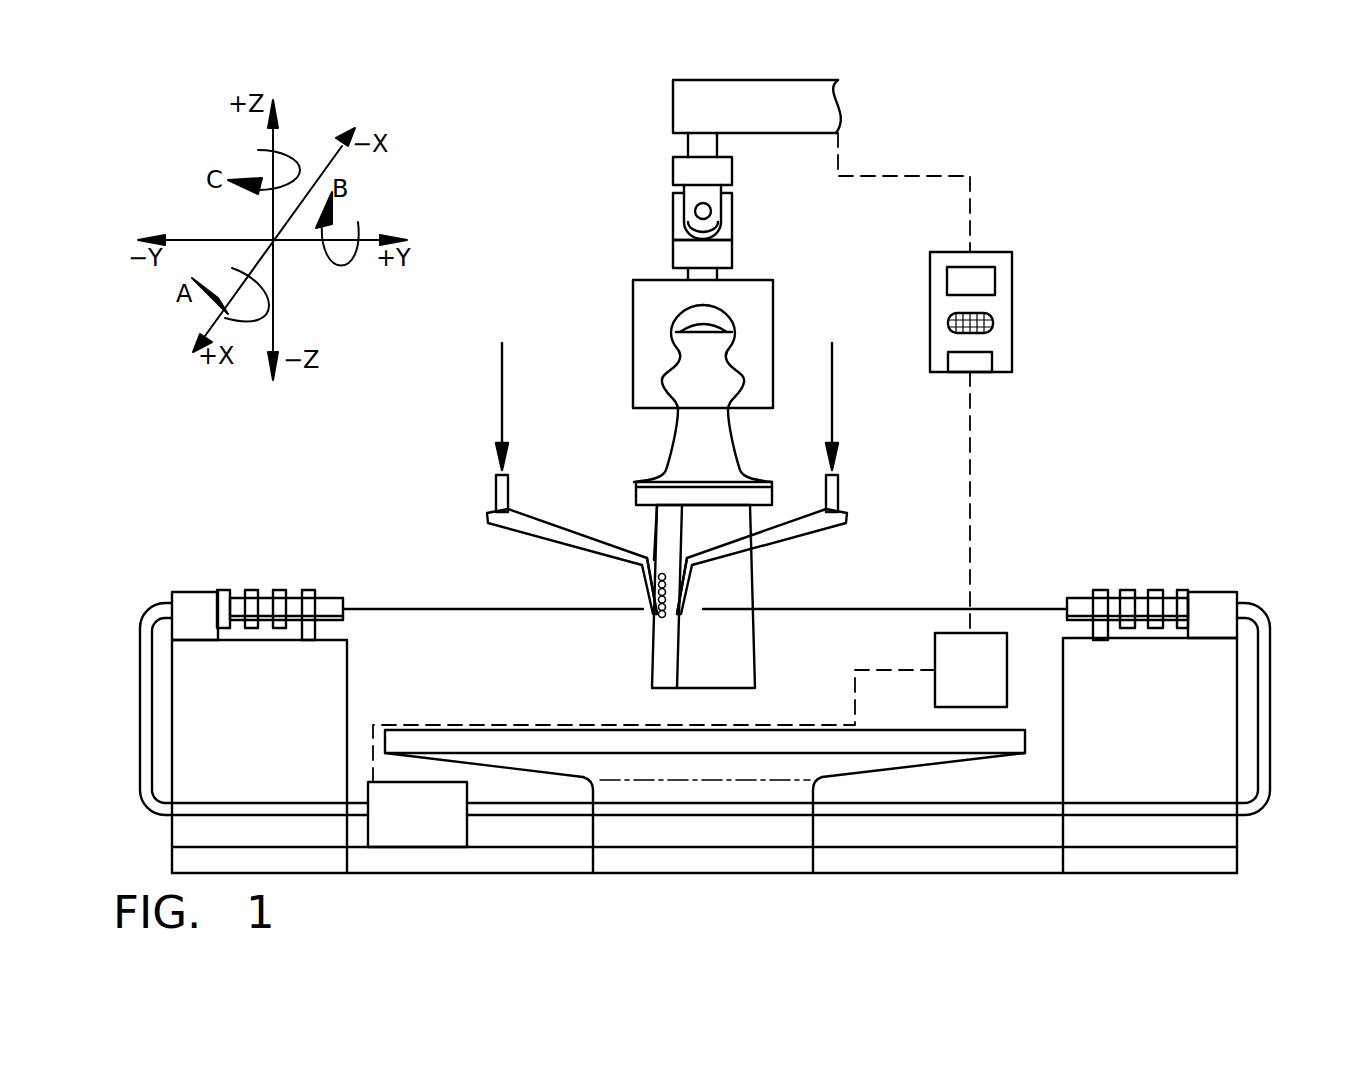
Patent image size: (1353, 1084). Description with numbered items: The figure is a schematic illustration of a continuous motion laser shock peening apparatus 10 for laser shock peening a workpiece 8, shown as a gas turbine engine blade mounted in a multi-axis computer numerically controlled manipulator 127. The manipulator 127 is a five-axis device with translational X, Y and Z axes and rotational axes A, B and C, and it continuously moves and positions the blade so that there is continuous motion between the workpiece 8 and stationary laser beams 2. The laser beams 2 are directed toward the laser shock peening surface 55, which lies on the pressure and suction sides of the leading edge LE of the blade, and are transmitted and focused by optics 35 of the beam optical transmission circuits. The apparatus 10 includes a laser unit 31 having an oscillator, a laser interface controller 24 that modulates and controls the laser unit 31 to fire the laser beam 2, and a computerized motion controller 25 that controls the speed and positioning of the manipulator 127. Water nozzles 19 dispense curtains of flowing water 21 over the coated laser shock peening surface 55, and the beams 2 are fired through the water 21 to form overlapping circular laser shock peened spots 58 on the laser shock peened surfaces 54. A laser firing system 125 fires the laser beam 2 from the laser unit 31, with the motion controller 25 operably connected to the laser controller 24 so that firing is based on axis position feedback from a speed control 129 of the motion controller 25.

The stationary laser beams 2 is at (392, 608).
The workpiece 8 is at (770, 573).
The continuous motion laser shock peening apparatus 10 is at (904, 412).
The water nozzles 19 is at (545, 536).
The curtain of flowing water 21 is at (650, 578).
The laser interface controller 24 is at (988, 680).
The computerized motion controller 25 is at (1012, 283).
The laser unit 31 is at (432, 829).
The optics 35 is at (252, 590).
The laser shock peened surfaces 54 is at (662, 652).
The laser shock peening surface 55 is at (688, 631).
The laser shock peened spots 58 is at (648, 623).
The laser firing system 125 is at (1137, 292).
The multi-axis computer numerically controlled manipulator 127 is at (672, 105).
The speed control 129 is at (983, 365).
The leading edge LE is at (655, 530).